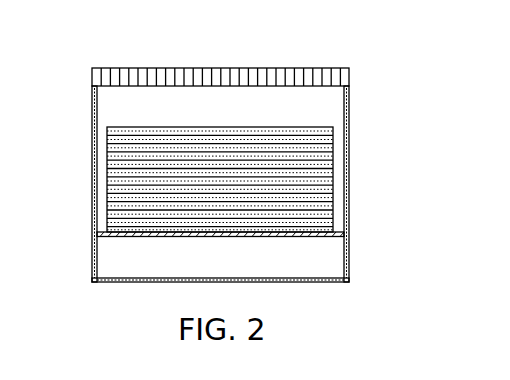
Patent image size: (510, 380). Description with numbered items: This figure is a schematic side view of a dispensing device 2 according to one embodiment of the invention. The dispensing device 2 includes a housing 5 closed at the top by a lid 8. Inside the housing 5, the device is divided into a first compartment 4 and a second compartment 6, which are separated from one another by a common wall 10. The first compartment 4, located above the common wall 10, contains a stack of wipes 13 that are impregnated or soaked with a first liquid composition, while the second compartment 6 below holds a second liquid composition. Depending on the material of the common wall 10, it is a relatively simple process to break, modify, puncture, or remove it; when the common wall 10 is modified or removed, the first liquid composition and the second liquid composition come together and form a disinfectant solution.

The dispensing device 2 is at (106, 54).
The first compartment 4 is at (228, 118).
The housing 5 is at (92, 150).
The second compartment 6 is at (225, 267).
The lid 8 is at (272, 74).
The common wall 10 is at (129, 237).
The stack of wipes 13 is at (307, 163).